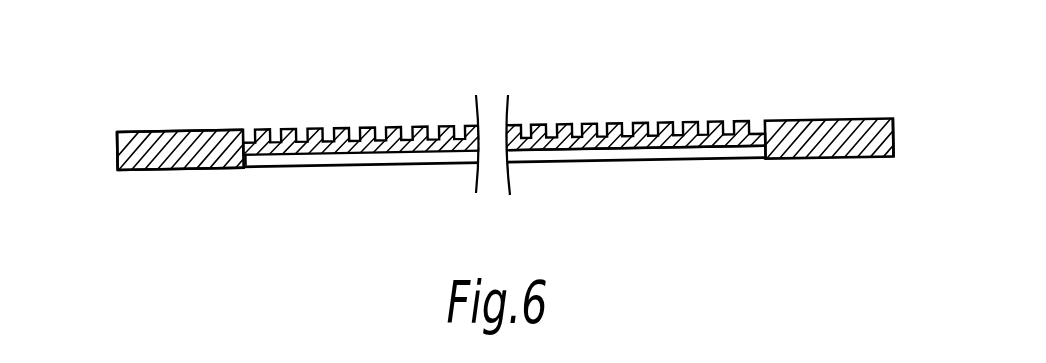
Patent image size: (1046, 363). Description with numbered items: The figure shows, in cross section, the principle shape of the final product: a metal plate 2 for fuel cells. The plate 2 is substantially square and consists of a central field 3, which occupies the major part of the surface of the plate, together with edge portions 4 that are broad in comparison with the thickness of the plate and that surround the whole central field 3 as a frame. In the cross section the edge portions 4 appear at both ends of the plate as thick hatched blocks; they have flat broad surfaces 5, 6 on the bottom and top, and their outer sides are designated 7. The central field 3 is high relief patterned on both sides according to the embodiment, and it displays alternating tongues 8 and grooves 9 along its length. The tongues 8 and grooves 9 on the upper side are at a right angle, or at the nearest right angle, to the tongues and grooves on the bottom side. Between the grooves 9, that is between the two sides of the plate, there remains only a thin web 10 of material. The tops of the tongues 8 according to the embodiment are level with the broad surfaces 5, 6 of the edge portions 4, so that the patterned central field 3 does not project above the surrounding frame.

The metal plate for fuel cells 2 is at (655, 98).
The central field 3 is at (441, 167).
The edge portions 4 is at (200, 155).
The flat broad surface 5 is at (153, 172).
The flat broad surface 6 is at (168, 131).
The outer sides 7 is at (117, 150).
The tongues 8 is at (368, 128).
The grooves 9 is at (380, 130).
The thin web 10 is at (558, 140).